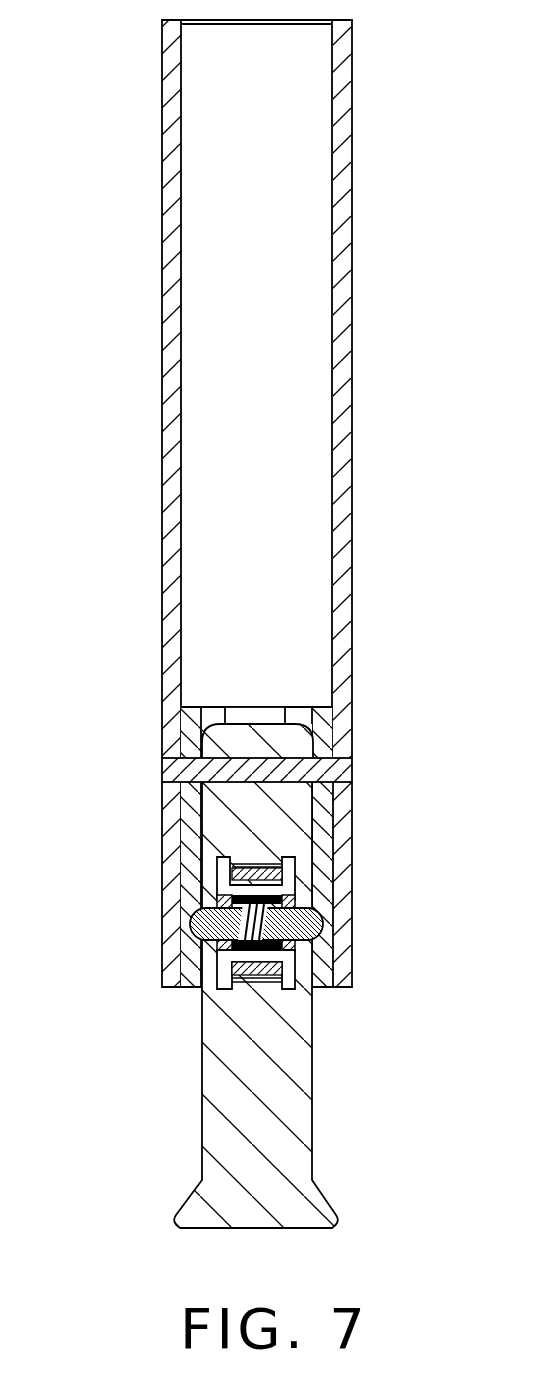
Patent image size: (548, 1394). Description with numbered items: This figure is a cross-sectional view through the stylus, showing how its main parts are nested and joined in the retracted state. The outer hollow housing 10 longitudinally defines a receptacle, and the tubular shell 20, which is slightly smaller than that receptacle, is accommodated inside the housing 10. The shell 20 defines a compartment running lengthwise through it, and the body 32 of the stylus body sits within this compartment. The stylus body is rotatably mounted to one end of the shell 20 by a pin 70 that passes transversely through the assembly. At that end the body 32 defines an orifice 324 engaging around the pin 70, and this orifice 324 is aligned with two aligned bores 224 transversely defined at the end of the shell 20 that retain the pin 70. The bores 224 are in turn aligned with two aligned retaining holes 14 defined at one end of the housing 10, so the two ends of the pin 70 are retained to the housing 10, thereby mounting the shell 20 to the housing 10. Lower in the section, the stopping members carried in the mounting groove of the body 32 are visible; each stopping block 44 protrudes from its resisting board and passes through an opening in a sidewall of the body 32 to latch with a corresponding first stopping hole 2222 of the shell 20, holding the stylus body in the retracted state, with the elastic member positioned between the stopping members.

The housing 10 is at (338, 176).
The retaining holes 14 is at (340, 754).
The shell 20 is at (320, 855).
The body 32 is at (277, 1097).
The stopping block 44 is at (200, 922).
The pin 70 is at (337, 768).
The bores 224 is at (343, 806).
The orifice 324 is at (212, 735).
The first stopping holes 2222 is at (212, 900).